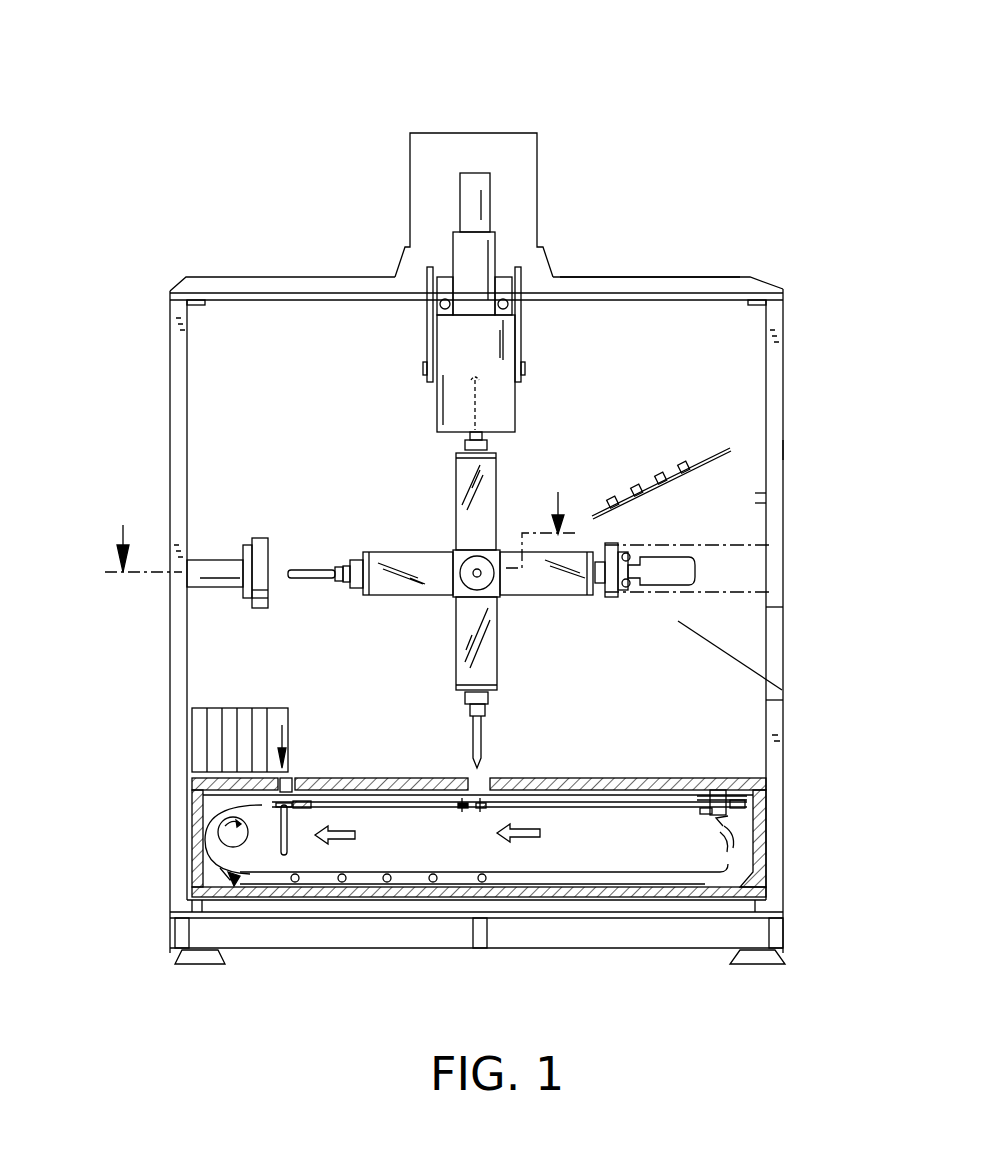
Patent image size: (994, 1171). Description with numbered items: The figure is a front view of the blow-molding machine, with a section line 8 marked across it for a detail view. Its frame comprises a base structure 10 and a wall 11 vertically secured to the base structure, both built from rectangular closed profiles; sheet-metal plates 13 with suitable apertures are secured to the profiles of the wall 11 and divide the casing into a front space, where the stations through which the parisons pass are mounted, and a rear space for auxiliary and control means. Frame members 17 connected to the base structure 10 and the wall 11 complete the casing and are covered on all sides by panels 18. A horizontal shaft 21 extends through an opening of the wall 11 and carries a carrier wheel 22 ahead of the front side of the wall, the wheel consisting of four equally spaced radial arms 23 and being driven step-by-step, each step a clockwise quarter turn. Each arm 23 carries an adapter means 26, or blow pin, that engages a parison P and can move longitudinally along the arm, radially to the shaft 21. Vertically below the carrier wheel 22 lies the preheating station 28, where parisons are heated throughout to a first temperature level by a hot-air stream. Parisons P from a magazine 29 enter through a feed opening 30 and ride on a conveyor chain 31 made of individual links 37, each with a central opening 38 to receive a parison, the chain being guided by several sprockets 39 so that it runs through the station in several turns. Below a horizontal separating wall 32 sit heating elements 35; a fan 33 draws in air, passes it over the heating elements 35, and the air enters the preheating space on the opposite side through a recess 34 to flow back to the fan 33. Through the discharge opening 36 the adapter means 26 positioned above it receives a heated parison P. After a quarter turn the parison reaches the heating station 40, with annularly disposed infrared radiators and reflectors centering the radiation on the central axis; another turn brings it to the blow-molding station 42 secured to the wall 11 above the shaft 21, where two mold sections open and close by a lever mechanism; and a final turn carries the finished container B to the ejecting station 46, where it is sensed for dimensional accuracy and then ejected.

The section line 8- 8 is at (341, 533).
The base structure 10 is at (535, 937).
The wall 11 is at (646, 427).
The sheet-metal plates 13 is at (748, 358).
The frame members 17 is at (773, 447).
The panels 18 is at (607, 290).
The horizontal shaft 21 is at (480, 577).
The carrier wheel 22 is at (447, 599).
The radial arms 23 is at (567, 596).
The adapter means 26 is at (352, 566).
The preheating station 28 is at (634, 767).
The magazine 29 is at (288, 728).
The feed opening 30 is at (292, 778).
The conveyor chain 31 is at (380, 808).
The horizontal separating wall 32 is at (578, 872).
The fan 33 is at (241, 838).
The recess 34 is at (728, 870).
The heating elements 35 is at (485, 876).
The discharge opening 36 is at (483, 778).
The links 37 is at (312, 810).
The central opening 38 is at (478, 810).
The sprockets 39 is at (712, 805).
The heating station 40 is at (262, 546).
The blow-molding station 42 is at (430, 401).
The ejecting station 46 is at (684, 490).
The container B is at (652, 560).
The parison P is at (322, 576).